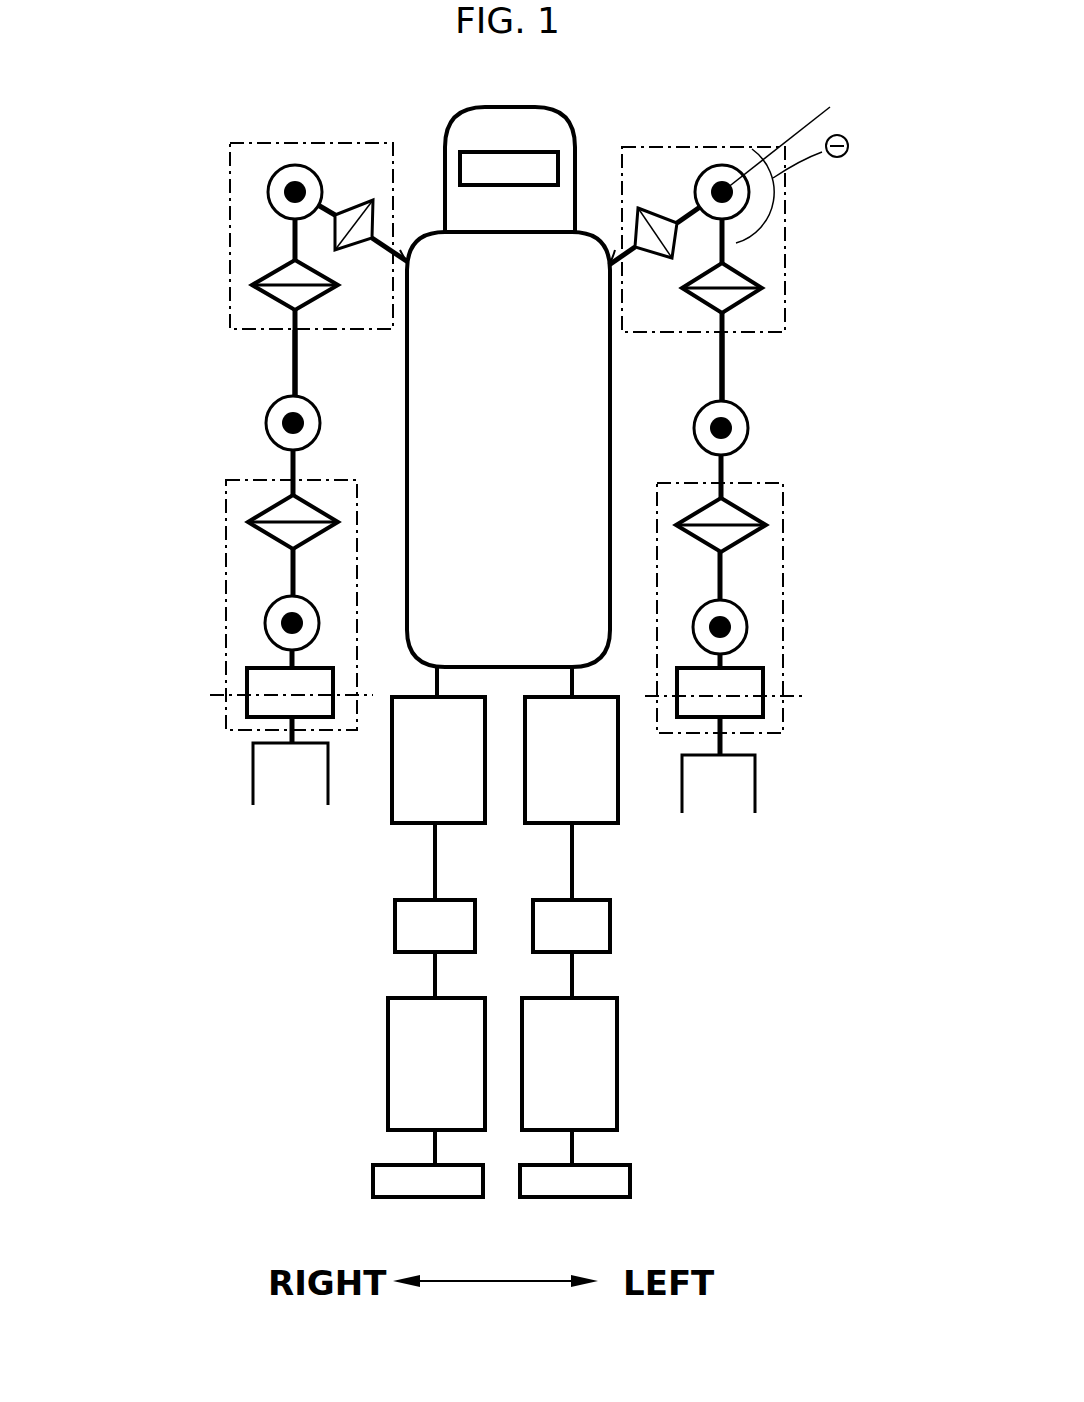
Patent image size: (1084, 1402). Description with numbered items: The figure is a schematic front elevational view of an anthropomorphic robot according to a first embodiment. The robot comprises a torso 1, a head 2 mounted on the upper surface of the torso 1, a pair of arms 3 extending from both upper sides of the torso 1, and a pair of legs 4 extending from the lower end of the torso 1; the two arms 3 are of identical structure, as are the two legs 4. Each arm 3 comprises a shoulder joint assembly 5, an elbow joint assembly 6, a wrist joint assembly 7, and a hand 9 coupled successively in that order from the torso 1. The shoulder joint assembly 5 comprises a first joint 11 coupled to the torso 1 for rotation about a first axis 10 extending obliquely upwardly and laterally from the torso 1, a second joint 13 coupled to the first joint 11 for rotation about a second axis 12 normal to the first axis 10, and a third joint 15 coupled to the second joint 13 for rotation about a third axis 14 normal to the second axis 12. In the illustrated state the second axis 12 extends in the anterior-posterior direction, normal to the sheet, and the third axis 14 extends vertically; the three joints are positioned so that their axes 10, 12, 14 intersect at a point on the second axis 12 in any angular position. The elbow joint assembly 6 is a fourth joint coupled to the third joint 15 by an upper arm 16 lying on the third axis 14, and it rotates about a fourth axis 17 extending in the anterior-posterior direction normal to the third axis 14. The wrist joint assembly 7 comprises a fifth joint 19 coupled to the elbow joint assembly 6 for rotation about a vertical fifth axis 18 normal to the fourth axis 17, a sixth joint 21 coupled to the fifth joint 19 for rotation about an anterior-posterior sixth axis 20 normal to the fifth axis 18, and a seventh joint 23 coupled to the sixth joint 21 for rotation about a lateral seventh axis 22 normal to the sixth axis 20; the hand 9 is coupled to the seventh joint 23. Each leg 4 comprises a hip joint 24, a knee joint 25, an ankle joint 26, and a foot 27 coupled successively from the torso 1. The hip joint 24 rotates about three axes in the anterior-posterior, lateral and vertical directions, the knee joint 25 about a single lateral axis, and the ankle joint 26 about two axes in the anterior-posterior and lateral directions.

The torso 1 is at (608, 385).
The head 2 is at (513, 108).
The arm 3 is at (205, 354).
The leg 4 is at (345, 920).
The shoulder joint assembly 5 is at (235, 143).
The elbow joint assembly 6 is at (267, 424).
The wrist joint assembly 7 is at (226, 490).
The hand 9 is at (253, 782).
The first axis 10 is at (400, 255).
The first joint 11 is at (362, 205).
The second axis 12 is at (291, 192).
The second joint 13 is at (308, 168).
The third axis 14 is at (294, 240).
The third joint 15 is at (296, 297).
The upper arm 16 is at (294, 374).
The fourth axis 17 is at (291, 423).
The fifth axis 18 is at (292, 575).
The fifth joint 19 is at (270, 535).
The sixth axis 20 is at (290, 628).
The sixth joint 21 is at (266, 624).
The seventh axis 22 is at (215, 697).
The seventh joint 23 is at (250, 718).
The hip joint 24 is at (392, 785).
The knee joint 25 is at (395, 935).
The ankle joint 26 is at (388, 1075).
The foot 27 is at (373, 1185).